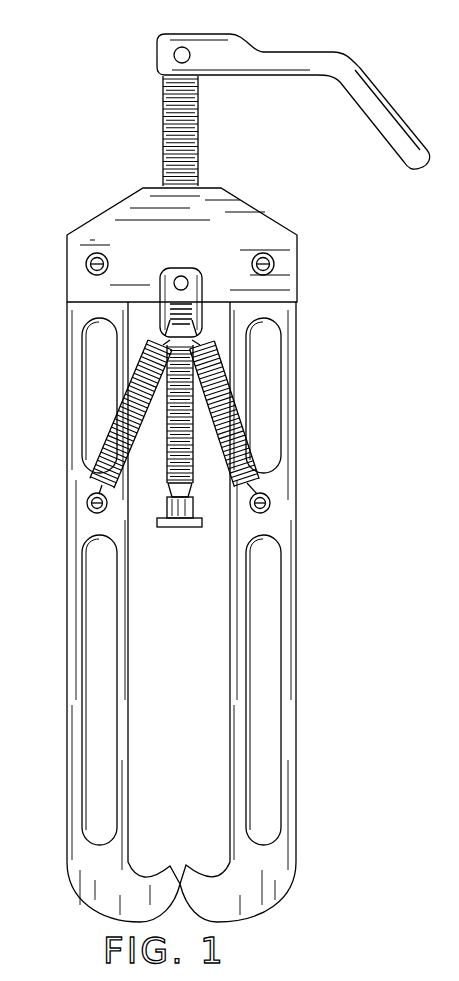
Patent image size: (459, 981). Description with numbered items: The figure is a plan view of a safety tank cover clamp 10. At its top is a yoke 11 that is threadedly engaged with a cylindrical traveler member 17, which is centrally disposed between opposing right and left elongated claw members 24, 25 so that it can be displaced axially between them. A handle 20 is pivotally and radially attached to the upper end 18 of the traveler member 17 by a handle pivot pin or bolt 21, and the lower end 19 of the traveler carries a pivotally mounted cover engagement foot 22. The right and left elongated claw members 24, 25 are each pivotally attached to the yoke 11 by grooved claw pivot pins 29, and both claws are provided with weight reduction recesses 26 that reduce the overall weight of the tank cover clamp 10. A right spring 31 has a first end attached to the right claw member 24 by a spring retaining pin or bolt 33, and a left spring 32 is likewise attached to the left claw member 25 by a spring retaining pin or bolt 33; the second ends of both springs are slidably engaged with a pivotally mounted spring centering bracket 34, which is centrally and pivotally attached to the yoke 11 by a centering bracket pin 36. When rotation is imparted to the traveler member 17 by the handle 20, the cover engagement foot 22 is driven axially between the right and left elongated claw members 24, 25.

The safety tank cover clamp 10 is at (88, 161).
The yoke 11 is at (268, 214).
The cylindrical traveler member 17 is at (200, 135).
The upper end of traveler member 18 is at (282, 87).
The lower end of traveler member 19 is at (168, 490).
The handle 20 is at (394, 105).
The handle pivot pin or bolt 21 is at (173, 55).
The cover engagement foot 22 is at (178, 528).
The right elongated claw member 24 is at (292, 530).
The left elongated claw member 25 is at (72, 508).
The weight reduction recesses 26 is at (88, 347).
The claw pivot pins 29 is at (85, 265).
The right spring 31 is at (255, 453).
The left spring 32 is at (104, 445).
The spring retaining pin or bolt 33 is at (88, 507).
The spring centering bracket 34 is at (184, 271).
The centering bracket pin 36 is at (190, 283).